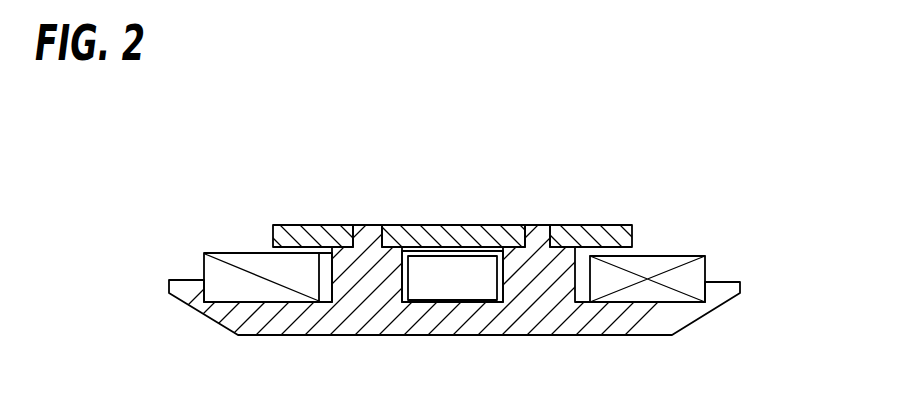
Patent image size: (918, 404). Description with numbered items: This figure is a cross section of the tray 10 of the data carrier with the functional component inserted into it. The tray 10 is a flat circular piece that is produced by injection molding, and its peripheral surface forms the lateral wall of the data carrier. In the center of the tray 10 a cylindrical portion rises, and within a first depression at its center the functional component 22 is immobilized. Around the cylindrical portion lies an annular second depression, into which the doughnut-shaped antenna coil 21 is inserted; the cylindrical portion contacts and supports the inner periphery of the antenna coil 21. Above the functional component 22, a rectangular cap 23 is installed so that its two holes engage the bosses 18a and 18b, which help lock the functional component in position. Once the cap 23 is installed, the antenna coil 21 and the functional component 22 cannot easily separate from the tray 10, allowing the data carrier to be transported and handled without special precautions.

The tray 10 is at (600, 323).
The boss 18a is at (368, 225).
The boss 18b is at (543, 225).
The antenna coil 21 is at (692, 255).
The functional component 22 is at (452, 288).
The cap 23 is at (627, 227).